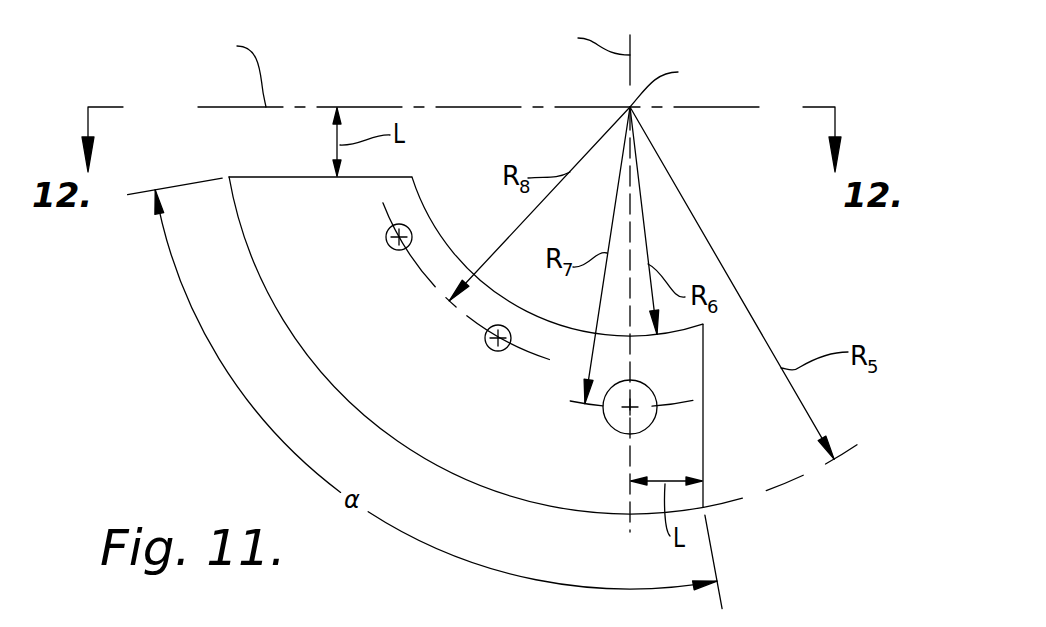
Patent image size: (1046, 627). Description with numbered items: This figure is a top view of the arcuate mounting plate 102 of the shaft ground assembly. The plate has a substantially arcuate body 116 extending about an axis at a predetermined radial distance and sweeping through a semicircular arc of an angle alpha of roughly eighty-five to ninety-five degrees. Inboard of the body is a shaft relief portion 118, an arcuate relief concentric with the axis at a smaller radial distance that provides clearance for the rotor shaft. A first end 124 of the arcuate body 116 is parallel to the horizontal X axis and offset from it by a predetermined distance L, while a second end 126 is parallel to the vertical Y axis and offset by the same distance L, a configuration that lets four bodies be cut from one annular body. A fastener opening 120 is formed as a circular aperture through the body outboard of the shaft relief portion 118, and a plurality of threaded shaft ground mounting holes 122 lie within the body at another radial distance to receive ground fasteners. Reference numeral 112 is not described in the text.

The arcuate mounting plate 102 is at (765, 63).
The sector plate body 112 is at (295, 270).
The arcuate body 116 is at (556, 508).
The shaft relief portion 118 is at (438, 204).
The fastener opening 120 is at (610, 425).
The shaft ground mounting holes 122 is at (392, 250).
The first end 124 is at (282, 177).
The second end 126 is at (703, 456).